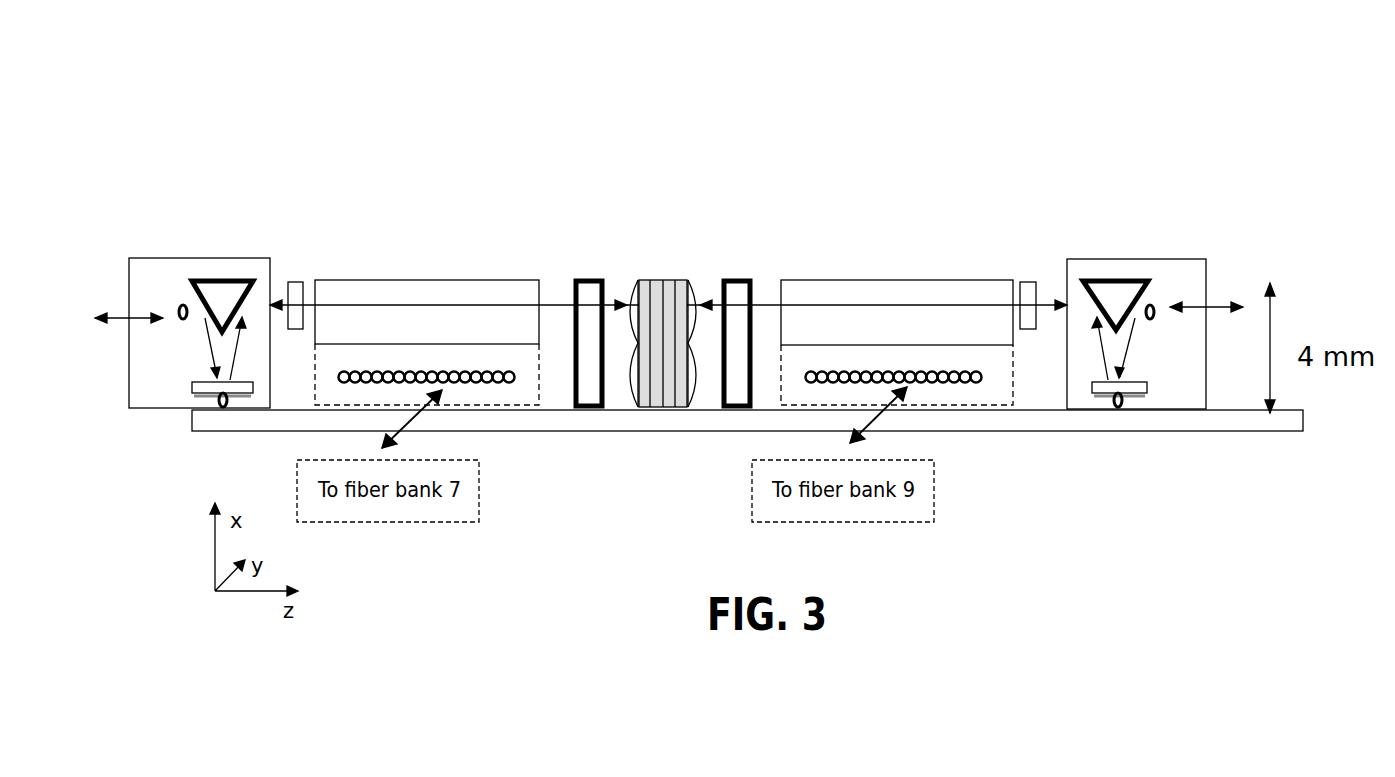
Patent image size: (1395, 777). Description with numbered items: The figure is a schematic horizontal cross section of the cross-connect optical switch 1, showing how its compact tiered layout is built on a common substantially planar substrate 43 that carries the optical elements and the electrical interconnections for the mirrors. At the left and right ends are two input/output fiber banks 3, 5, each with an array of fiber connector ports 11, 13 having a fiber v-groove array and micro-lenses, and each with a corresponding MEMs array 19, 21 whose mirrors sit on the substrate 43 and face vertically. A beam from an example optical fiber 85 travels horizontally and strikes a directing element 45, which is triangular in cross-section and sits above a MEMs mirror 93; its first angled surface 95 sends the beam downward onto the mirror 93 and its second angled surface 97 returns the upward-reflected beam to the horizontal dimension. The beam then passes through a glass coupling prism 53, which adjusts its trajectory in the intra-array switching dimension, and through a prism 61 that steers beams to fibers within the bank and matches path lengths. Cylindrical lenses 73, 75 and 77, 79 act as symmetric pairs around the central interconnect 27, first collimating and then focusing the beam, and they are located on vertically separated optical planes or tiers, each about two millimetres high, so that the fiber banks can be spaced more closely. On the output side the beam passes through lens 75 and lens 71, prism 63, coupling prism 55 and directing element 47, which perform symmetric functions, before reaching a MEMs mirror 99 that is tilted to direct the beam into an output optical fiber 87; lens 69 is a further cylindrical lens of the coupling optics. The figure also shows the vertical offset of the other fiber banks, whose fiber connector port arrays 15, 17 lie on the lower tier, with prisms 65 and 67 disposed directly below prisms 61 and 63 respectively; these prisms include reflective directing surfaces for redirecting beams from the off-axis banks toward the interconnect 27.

The optical switch 1 is at (817, 186).
The fiber bank 3 is at (190, 258).
The fiber bank 5 is at (1157, 259).
The fiber connector port array 11 is at (183, 322).
The fiber connector port array 13 is at (1151, 321).
The fiber connector port array 15 is at (345, 383).
The fiber connector port array 17 is at (985, 383).
The MEMs array 19 is at (223, 407).
The MEMs array 21 is at (1118, 408).
The interconnect 27 is at (663, 280).
The substrate 43 is at (1175, 420).
The directing element 45 is at (222, 280).
The directing element 47 is at (1112, 280).
The coupling prism 53 is at (297, 282).
The coupling prism 55 is at (1028, 282).
The prism 61 is at (441, 292).
The prism 63 is at (897, 292).
The prism 65 is at (527, 398).
The prism 67 is at (923, 398).
The cylindrical lens 69 is at (593, 400).
The cylindrical lens 71 is at (740, 400).
The cylindrical lens 73 is at (632, 296).
The cylindrical lens 75 is at (699, 296).
The cylindrical lens 77 is at (630, 409).
The cylindrical lens 79 is at (695, 399).
The optical fiber 85 is at (122, 318).
The optical fiber 87 is at (1210, 310).
The MEMs mirror 93 is at (203, 392).
The first angled surface 95 is at (207, 303).
The second angled surface 97 is at (243, 300).
The MEMs mirror 99 is at (1147, 388).